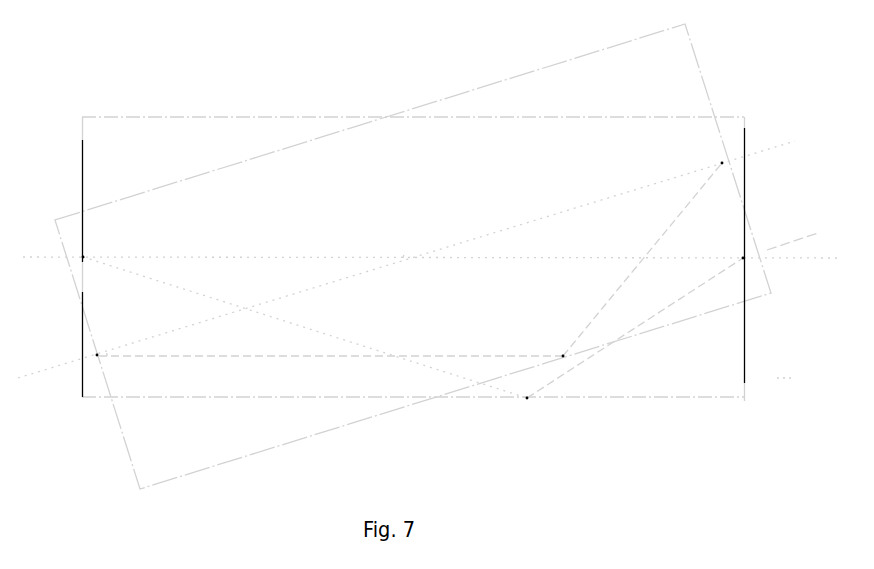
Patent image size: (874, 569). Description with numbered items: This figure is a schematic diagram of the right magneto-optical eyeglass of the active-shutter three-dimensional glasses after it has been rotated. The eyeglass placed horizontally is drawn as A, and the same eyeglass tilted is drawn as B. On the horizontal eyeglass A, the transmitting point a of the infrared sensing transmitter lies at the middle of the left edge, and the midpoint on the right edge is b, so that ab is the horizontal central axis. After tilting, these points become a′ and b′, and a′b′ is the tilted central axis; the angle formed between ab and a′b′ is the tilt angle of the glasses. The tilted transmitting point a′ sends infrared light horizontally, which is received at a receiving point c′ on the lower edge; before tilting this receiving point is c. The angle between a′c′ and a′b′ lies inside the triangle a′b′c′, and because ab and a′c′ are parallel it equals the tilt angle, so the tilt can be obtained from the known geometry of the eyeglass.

The transmitting point a is at (89, 243).
The transmitting point after tilt a′ is at (106, 339).
The midpoint on right edge b is at (737, 247).
The right-edge midpoint after tilt b′ is at (712, 153).
The receiving point before tilt c is at (527, 410).
The receiving point c′ is at (555, 344).
The eyeglass placed horizontally A is at (795, 378).
The eyeglass tilted B is at (801, 235).